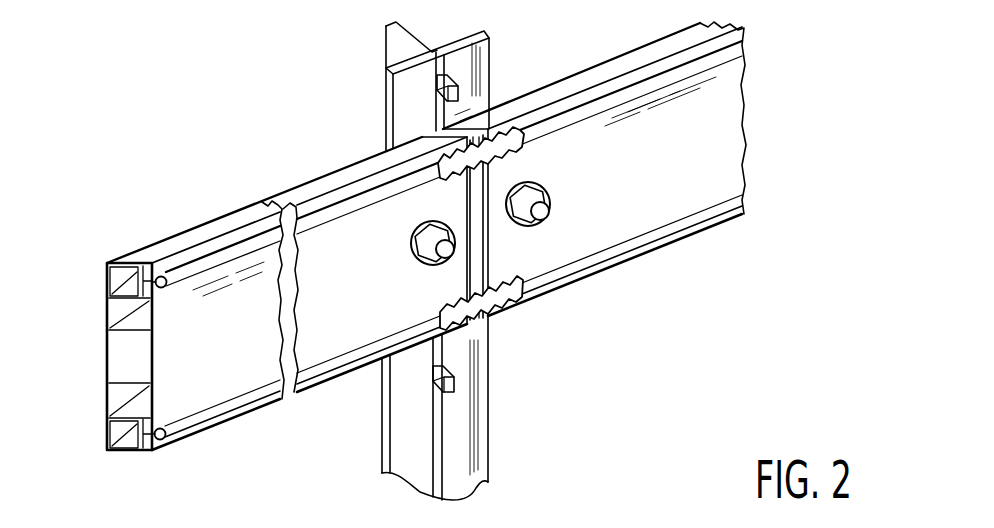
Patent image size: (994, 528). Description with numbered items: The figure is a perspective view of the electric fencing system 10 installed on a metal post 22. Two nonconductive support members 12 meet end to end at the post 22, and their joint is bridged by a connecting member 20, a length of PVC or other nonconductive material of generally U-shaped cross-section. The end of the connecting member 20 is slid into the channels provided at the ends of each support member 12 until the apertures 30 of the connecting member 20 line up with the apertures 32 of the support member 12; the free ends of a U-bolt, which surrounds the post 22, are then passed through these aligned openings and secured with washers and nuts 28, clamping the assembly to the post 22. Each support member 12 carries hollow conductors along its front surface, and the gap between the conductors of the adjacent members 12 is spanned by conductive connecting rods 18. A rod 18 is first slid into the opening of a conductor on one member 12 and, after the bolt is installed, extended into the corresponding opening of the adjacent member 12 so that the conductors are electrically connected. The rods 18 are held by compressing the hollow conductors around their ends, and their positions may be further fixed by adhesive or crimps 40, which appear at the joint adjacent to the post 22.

The electric fencing system 10 is at (633, 392).
The nonconductive support member 12 is at (103, 358).
The conductive connecting rod 18 is at (490, 118).
The connecting member 20 is at (480, 226).
The metal post 22 is at (400, 87).
The nut 28 is at (411, 244).
The aperture of the connecting member 30 is at (397, 274).
The aperture of the support member 32 is at (600, 220).
The crimp 40 is at (455, 151).